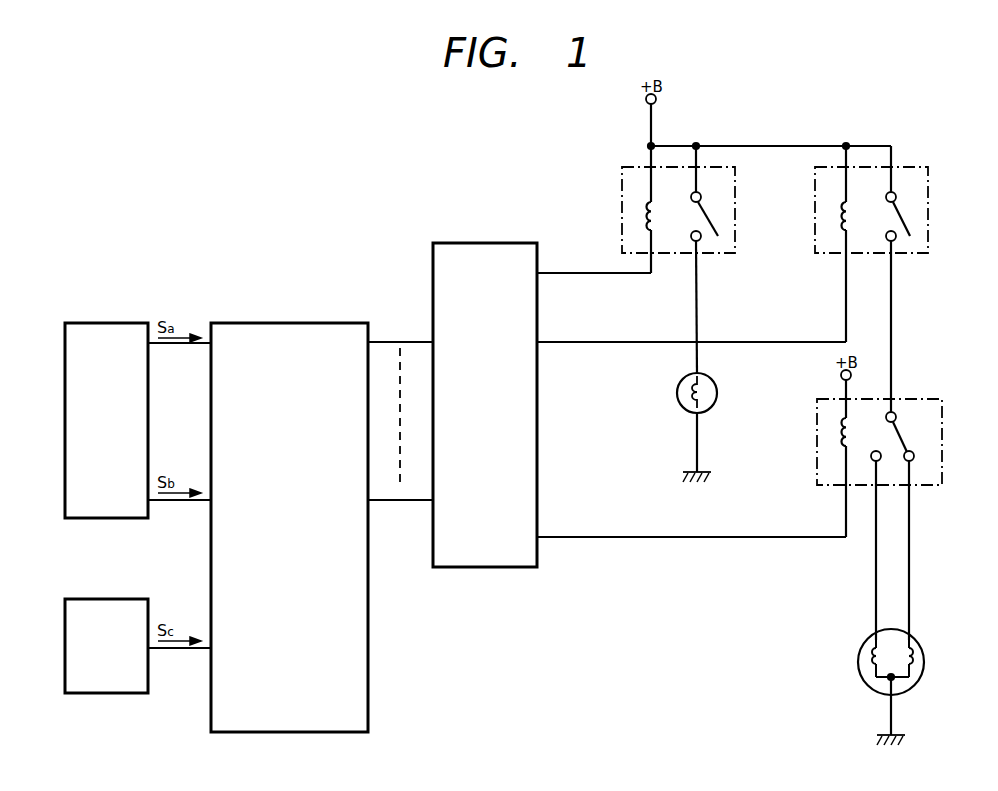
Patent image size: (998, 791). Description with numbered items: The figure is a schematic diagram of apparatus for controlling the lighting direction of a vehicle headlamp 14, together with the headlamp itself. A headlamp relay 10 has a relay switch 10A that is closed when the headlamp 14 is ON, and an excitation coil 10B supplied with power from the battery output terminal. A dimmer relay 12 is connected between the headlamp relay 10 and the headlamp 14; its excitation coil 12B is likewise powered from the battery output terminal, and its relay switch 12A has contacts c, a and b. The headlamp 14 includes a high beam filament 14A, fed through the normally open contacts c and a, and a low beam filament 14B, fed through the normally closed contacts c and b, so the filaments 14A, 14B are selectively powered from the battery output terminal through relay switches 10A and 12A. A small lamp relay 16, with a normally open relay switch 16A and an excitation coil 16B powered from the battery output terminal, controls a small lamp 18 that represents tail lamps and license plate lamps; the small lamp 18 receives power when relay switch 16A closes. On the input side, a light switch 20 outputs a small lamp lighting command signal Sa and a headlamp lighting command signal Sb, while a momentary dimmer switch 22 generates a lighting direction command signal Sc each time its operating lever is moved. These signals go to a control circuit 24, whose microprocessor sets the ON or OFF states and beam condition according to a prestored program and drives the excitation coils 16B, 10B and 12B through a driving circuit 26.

The headlamp relay 10 is at (870, 268).
The relay switch 10A is at (907, 213).
The excitation coil 10B is at (840, 207).
The dimmer relay 12 is at (878, 500).
The relay switch 12A is at (903, 441).
The excitation coil 12B is at (840, 444).
The headlamp 14 is at (889, 684).
The high beam filament 14A is at (868, 660).
The low beam filament 14B is at (915, 660).
The small lamp relay 16 is at (679, 250).
The relay switch 16A is at (717, 216).
The excitation coil 16B is at (644, 222).
The small lamp 18 is at (717, 390).
The light switch 20 is at (106, 323).
The dimmer switch 22 is at (106, 599).
The control circuit 24 is at (313, 323).
The driving circuit 26 is at (490, 243).